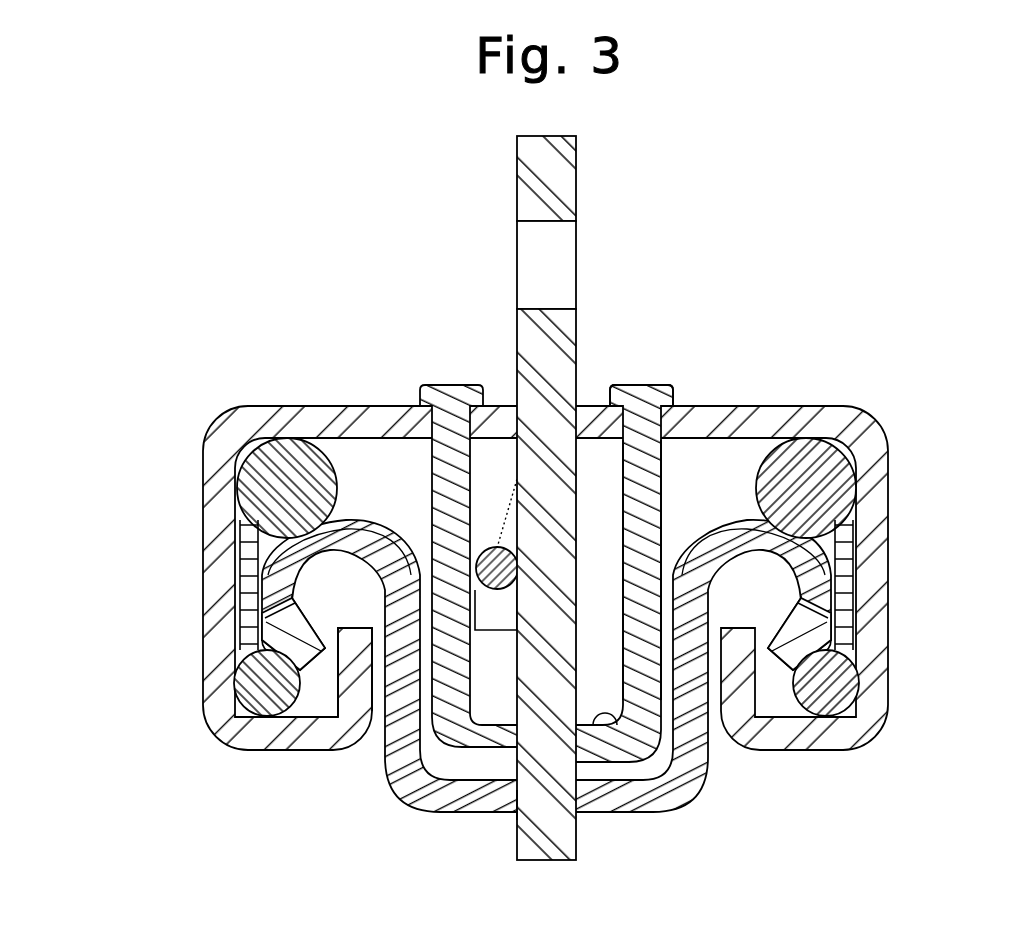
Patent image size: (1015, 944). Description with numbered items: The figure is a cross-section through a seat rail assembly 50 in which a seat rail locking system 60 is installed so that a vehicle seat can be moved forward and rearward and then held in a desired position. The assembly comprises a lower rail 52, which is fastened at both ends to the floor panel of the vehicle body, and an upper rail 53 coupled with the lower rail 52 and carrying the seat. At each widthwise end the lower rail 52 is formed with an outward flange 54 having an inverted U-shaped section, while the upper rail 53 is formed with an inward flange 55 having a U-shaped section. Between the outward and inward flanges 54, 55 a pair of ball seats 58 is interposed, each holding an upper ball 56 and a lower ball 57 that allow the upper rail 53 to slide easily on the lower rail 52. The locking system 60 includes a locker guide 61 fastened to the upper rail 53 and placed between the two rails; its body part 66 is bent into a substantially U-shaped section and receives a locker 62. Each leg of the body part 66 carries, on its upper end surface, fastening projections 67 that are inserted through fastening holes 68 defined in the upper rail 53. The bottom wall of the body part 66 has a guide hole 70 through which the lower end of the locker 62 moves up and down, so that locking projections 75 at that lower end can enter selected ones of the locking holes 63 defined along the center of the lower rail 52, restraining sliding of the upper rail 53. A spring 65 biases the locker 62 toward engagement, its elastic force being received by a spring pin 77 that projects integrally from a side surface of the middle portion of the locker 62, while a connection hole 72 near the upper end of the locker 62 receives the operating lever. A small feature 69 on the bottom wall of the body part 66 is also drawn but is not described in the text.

The slide assembly 50 is at (904, 432).
The U-shaped spring bracket 52 is at (387, 772).
The housing 53 is at (203, 535).
The hook 54 is at (265, 634).
The projection 55 is at (357, 628).
The upper roller 56 is at (282, 447).
The lower roller 57 is at (263, 705).
The serrated plate 58 is at (247, 589).
The fastening unit 60 is at (606, 504).
The bracket 61 is at (639, 562).
The shaft 62 is at (583, 190).
The lower shaft portion 63 is at (517, 803).
The pin 65 is at (483, 547).
The right arm 66 is at (661, 510).
The right flange 67 is at (622, 387).
The opening 68 is at (683, 426).
The projection 69 is at (610, 722).
The bottom plate 70 is at (515, 740).
The unthreaded portion 72 is at (577, 264).
The shaft lower end 75 is at (565, 847).
The hole 77 is at (500, 618).